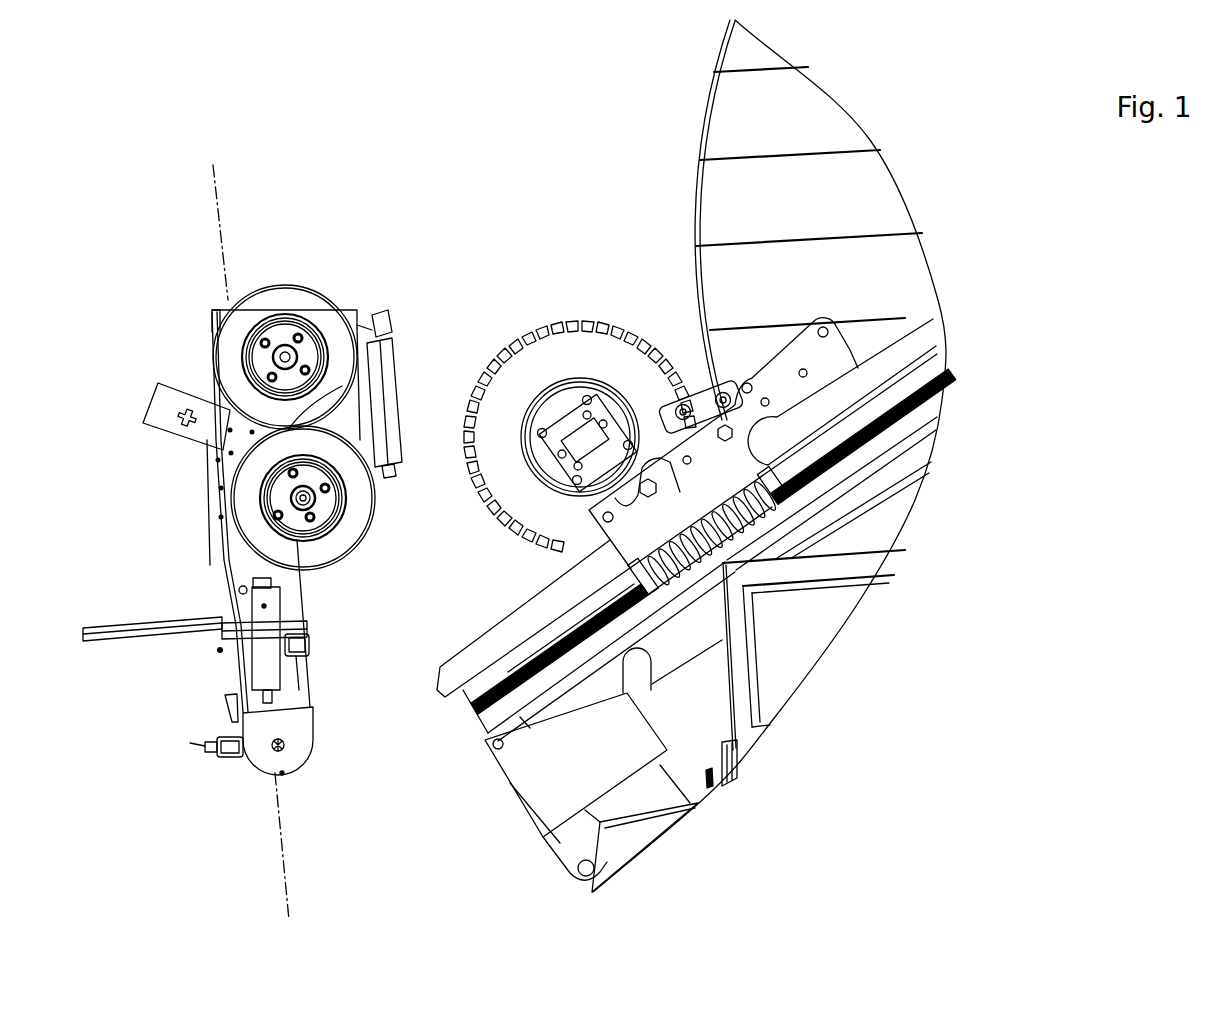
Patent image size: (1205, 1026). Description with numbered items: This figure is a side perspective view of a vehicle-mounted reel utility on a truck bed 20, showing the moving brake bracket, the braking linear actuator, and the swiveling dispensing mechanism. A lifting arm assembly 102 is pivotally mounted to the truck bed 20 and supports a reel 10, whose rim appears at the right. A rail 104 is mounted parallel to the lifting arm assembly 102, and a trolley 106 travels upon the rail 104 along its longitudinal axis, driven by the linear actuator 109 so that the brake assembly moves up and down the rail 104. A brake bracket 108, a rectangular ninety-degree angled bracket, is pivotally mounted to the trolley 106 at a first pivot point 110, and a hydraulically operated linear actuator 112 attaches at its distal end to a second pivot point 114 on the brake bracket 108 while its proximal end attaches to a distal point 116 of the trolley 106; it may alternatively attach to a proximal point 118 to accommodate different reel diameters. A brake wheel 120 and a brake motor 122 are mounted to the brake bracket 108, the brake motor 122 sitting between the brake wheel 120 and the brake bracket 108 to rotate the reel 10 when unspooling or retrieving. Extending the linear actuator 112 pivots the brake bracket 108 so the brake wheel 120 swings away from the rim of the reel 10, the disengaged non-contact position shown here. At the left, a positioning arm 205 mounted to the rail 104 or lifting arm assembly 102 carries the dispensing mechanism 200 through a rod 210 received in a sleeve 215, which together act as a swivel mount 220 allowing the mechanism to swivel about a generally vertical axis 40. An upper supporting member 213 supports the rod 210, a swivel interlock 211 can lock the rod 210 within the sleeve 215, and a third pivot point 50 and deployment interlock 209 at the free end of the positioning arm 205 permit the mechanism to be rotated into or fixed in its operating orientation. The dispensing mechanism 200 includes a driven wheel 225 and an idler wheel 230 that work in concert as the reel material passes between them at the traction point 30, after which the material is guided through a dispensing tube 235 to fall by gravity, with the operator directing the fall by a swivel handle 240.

The reel 10 is at (714, 82).
The truck bed 20 is at (728, 770).
The traction point 30 is at (363, 386).
The vertical axis 40 is at (274, 814).
The third pivot point 50 is at (285, 750).
The lifting arm assembly 102 is at (525, 817).
The rail 104 is at (442, 703).
The trolley 106 is at (850, 357).
The brake bracket 108 is at (620, 505).
The linear actuator 109 is at (943, 378).
The first pivot point 110 is at (665, 490).
The linear actuator 112 is at (707, 372).
The second pivot point 114 is at (590, 425).
The distal point 116 is at (752, 385).
The proximal point 118 is at (820, 327).
The brake wheel 120 is at (565, 330).
The brake motor 122 is at (566, 432).
The dispensing mechanism 200 is at (198, 300).
The positioning arm 205 is at (338, 678).
The deployment interlock 209 is at (190, 743).
The rod 210 is at (267, 604).
The swivel interlock 211 is at (307, 687).
The upper supporting member 213 is at (240, 563).
The sleeve 215 is at (263, 660).
The swivel mount 220 is at (300, 622).
The driven wheel 225 is at (237, 489).
The idler wheel 230 is at (216, 352).
The dispensing tube 235 is at (152, 404).
The swivel handle 240 is at (150, 618).